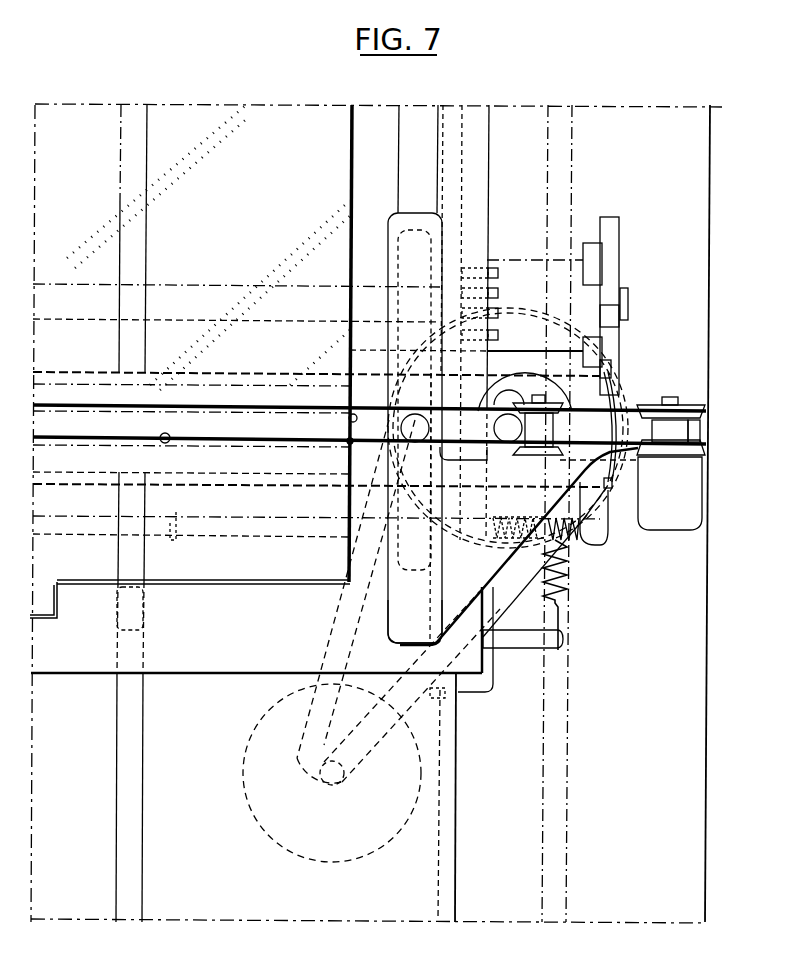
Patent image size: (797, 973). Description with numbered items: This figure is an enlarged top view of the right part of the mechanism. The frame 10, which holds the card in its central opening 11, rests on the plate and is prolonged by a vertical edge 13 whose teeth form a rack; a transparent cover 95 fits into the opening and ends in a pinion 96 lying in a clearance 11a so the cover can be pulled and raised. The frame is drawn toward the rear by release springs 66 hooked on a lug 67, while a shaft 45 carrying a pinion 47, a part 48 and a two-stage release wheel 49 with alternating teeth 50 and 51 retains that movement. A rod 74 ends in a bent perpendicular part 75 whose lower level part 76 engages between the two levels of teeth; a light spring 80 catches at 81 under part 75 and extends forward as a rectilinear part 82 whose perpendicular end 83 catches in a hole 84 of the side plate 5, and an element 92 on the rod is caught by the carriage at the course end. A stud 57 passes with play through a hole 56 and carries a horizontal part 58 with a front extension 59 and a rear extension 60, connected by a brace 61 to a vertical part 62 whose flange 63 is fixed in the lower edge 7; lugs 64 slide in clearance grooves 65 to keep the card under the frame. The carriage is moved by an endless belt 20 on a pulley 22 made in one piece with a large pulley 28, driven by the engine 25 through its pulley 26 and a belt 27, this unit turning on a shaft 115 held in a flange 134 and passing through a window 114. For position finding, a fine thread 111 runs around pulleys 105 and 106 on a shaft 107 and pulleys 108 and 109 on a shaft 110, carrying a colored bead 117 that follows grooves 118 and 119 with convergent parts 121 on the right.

The vertical edge 5 is at (456, 828).
The horizontal edge 7 is at (663, 650).
The frame 10 is at (200, 640).
The central opening 11 is at (350, 186).
The clearance 11a is at (42, 620).
The vertical edge 13 is at (488, 138).
The endless belt 20 is at (258, 373).
The pulley 22 is at (493, 380).
The engine 25 is at (255, 820).
The pulley 26 is at (334, 778).
The belt 27 is at (328, 645).
The large pulley 28 is at (412, 367).
The shaft 45 is at (228, 285).
The pinion 47 is at (492, 270).
The part 48 is at (522, 280).
The two-stage release wheel 49 is at (637, 268).
The teeth 50 is at (608, 237).
The teeth 51 is at (593, 257).
The hole 56 is at (398, 138).
The stud 57 is at (415, 442).
The horizontal part 58 is at (407, 495).
The front extension 59 is at (413, 623).
The rear extension 60 is at (418, 240).
The part in brace form 61 is at (502, 548).
The vertical part 62 is at (627, 458).
The flange 63 is at (677, 510).
The lugs 64 is at (128, 625).
The clearance grooves 65 is at (117, 780).
The release springs 66 is at (568, 583).
The lug 67 is at (532, 638).
The rod 74 is at (273, 535).
The bent perpendicular part 75 is at (600, 432).
The lower level part 76 is at (610, 380).
The light spring 80 is at (570, 540).
The catch point 81 is at (610, 490).
The rectilinear part 82 is at (495, 617).
The perpendicular end 83 is at (470, 693).
The hole 84 is at (447, 708).
The element 92 is at (174, 540).
The transparent cover 95 is at (208, 152).
The pinion 96 is at (45, 607).
The pulley 105 is at (518, 382).
The pulley 106 is at (540, 454).
The shaft 107 is at (543, 398).
The pulley 108 is at (700, 408).
The pulley 109 is at (700, 442).
The shaft 110 is at (673, 400).
The thread 111 is at (82, 437).
The window 114 is at (458, 493).
The shaft 115 is at (510, 437).
The colored bead 117 is at (168, 442).
The groove 118 is at (265, 415).
The groove 119 is at (222, 448).
The convergent parts 121 is at (348, 414).
The flange 134 is at (500, 405).